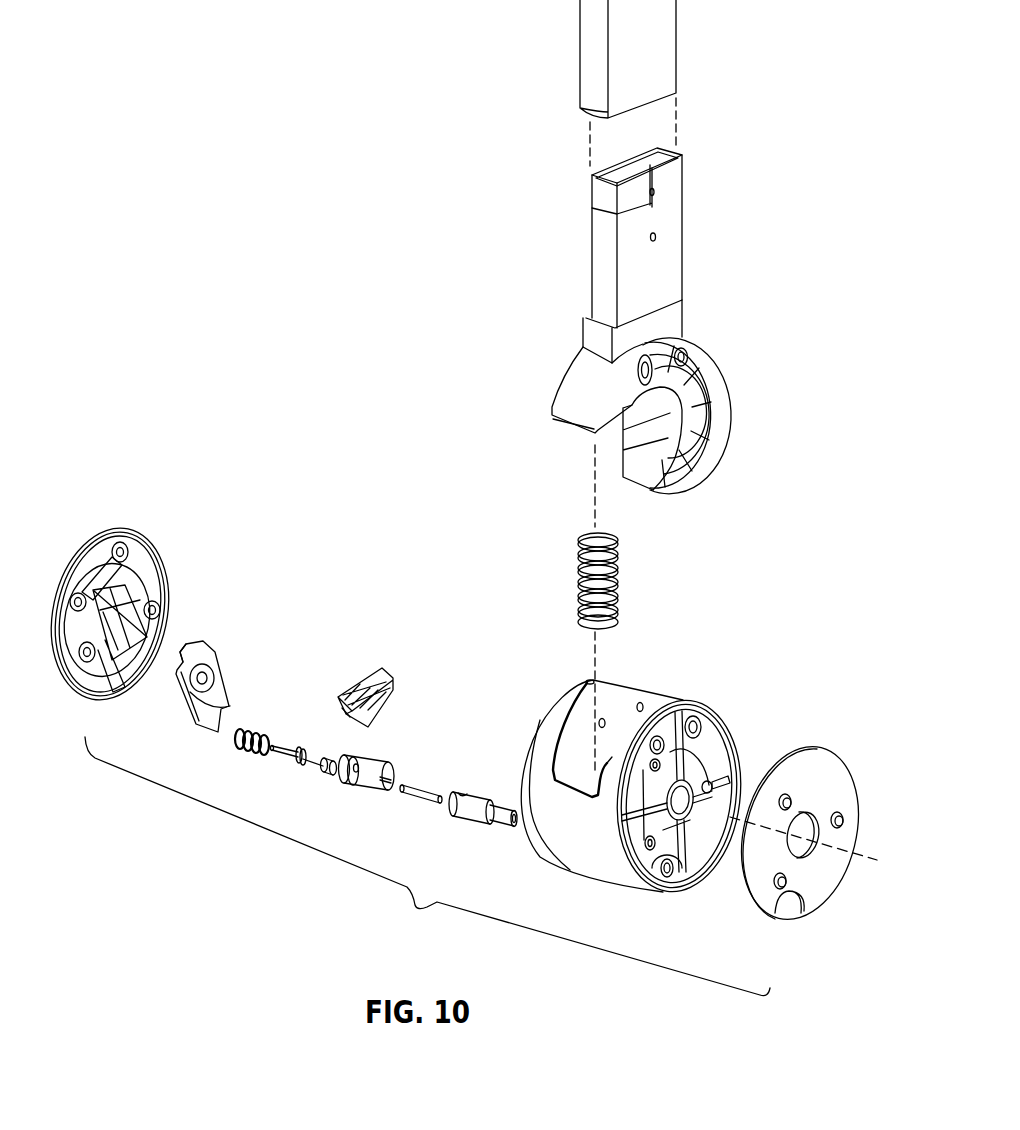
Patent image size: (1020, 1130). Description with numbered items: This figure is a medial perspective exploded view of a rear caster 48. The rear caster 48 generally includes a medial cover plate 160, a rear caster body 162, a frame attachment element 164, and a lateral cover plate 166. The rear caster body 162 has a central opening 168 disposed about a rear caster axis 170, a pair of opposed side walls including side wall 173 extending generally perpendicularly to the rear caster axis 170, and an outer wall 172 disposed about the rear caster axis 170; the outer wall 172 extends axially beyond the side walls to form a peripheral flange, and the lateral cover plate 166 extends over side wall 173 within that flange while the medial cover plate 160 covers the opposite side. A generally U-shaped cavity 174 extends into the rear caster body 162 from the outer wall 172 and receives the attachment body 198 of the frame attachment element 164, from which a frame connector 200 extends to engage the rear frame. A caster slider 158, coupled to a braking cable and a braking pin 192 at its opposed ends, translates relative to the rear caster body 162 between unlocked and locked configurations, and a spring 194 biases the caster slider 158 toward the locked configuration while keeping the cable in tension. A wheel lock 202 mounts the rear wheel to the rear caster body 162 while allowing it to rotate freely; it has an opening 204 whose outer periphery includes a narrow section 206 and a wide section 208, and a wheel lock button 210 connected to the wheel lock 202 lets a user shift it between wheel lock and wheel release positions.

The rear caster 48 is at (427, 866).
The caster slider 158 is at (471, 820).
The medial cover plate 160 is at (155, 525).
The rear caster body 162 is at (621, 781).
The frame attachment element 164 is at (569, 252).
The lateral cover plate 166 is at (846, 743).
The central opening 168 is at (682, 800).
The rear caster axis 170 is at (863, 858).
The outer wall 172 is at (545, 786).
The side wall 173 is at (710, 730).
The cavity 174 is at (577, 750).
The braking pin 192 is at (415, 800).
The spring 194 is at (246, 757).
The attachment body 198 is at (582, 373).
The frame connector 200 is at (665, 228).
The wheel lock 202 is at (229, 671).
The opening 204 is at (203, 683).
The narrow section 206 is at (203, 680).
The wide section 208 is at (218, 698).
The wheel lock button 210 is at (380, 700).